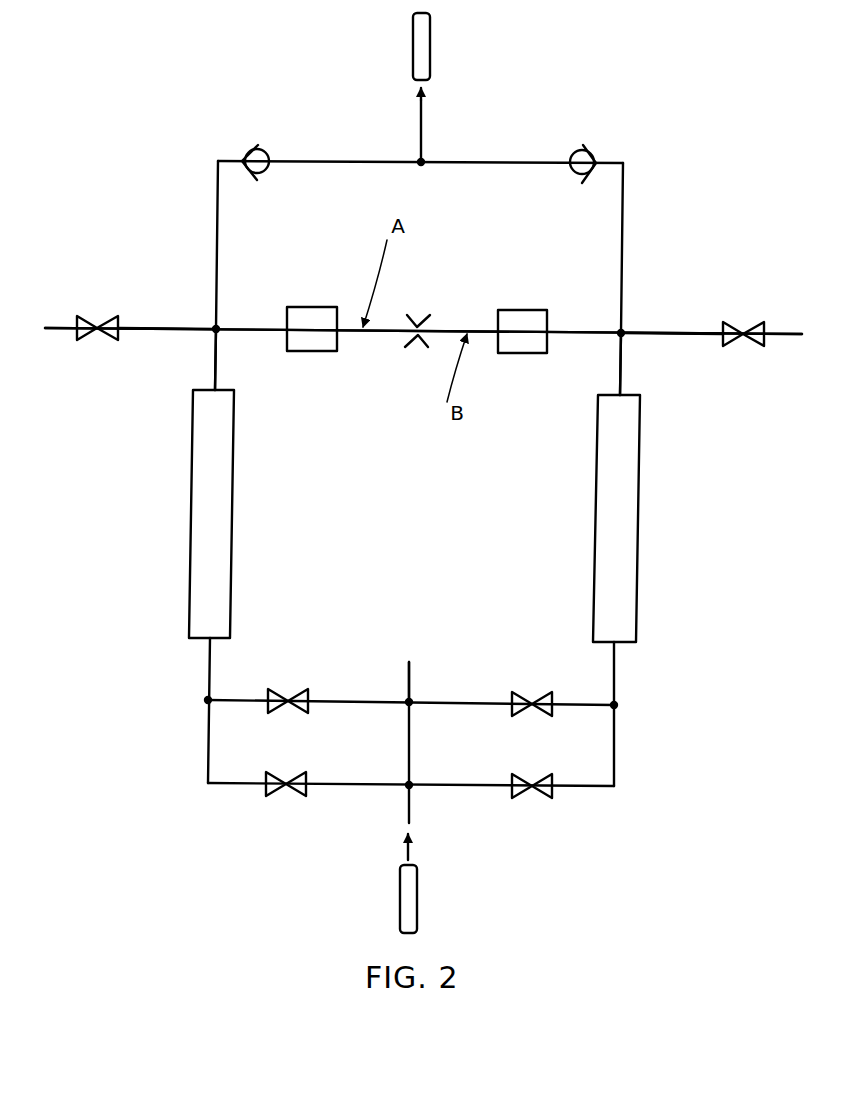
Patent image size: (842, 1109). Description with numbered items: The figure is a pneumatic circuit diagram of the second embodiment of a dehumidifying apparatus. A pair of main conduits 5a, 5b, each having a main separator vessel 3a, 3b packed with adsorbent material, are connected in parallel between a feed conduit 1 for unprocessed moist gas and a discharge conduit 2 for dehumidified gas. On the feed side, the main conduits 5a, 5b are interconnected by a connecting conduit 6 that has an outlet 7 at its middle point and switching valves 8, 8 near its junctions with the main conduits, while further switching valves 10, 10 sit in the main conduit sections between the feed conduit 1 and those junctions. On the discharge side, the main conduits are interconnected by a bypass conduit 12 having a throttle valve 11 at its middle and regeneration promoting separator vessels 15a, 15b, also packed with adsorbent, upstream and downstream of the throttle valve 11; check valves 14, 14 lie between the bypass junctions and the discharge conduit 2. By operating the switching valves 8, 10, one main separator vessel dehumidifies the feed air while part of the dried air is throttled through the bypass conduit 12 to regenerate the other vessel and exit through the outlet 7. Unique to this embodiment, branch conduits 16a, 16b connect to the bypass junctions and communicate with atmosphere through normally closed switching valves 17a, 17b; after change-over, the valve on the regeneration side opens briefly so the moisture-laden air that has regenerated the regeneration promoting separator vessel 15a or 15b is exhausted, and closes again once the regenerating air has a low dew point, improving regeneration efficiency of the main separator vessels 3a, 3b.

The feed conduit 1 is at (412, 907).
The discharge conduit 2 is at (427, 57).
The main separator vessel 3a is at (225, 531).
The main separator vessel 3b is at (607, 540).
The main conduit 5a is at (212, 353).
The main conduit 5b is at (622, 353).
The connecting conduit 6 is at (363, 705).
The outlet 7 is at (409, 662).
The switching valve 8 is at (295, 695).
The switching valve 10 is at (270, 790).
The throttle valve 11 is at (427, 348).
The bypass conduit 12 is at (583, 330).
The check valve 14 is at (258, 145).
The regeneration promoting separator vessel 15a is at (310, 307).
The regeneration promoting separator vessel 15b is at (513, 308).
The branch conduit 16a is at (165, 327).
The branch conduit 16b is at (668, 332).
The switching valve 17a is at (90, 317).
The switching valve 17b is at (747, 328).